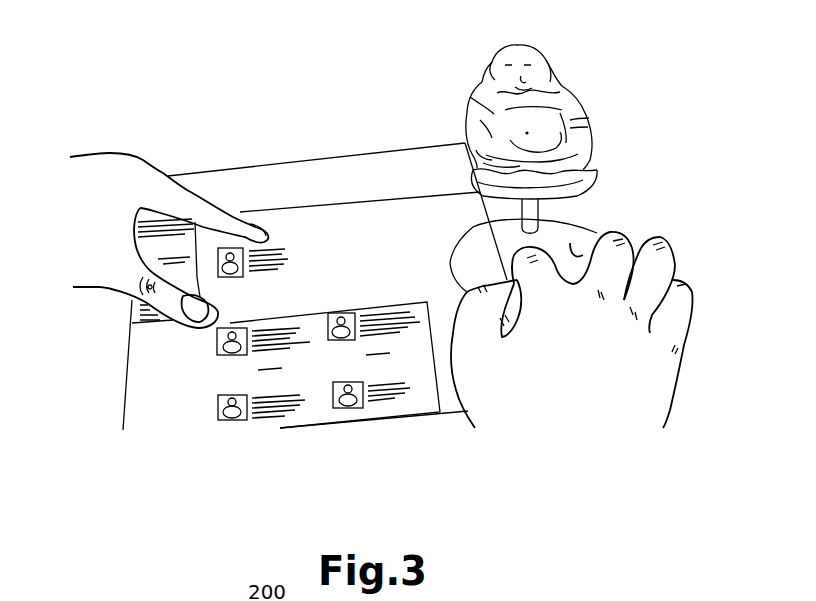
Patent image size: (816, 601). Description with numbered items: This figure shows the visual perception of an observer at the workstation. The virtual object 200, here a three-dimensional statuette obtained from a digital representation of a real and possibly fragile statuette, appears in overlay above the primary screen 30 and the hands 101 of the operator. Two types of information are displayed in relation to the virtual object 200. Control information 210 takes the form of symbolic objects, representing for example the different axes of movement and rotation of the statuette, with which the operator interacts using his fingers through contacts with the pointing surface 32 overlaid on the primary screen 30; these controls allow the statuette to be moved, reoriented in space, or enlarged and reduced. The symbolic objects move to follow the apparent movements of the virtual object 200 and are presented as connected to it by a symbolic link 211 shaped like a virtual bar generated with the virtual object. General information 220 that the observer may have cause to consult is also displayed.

The primary screen 30 is at (242, 162).
The pointing surface 32 is at (360, 191).
The hands 101 is at (107, 184).
The virtual object 200 is at (550, 91).
The control information 210 is at (598, 233).
The symbolic link 211 is at (540, 215).
The general information 220 is at (236, 419).